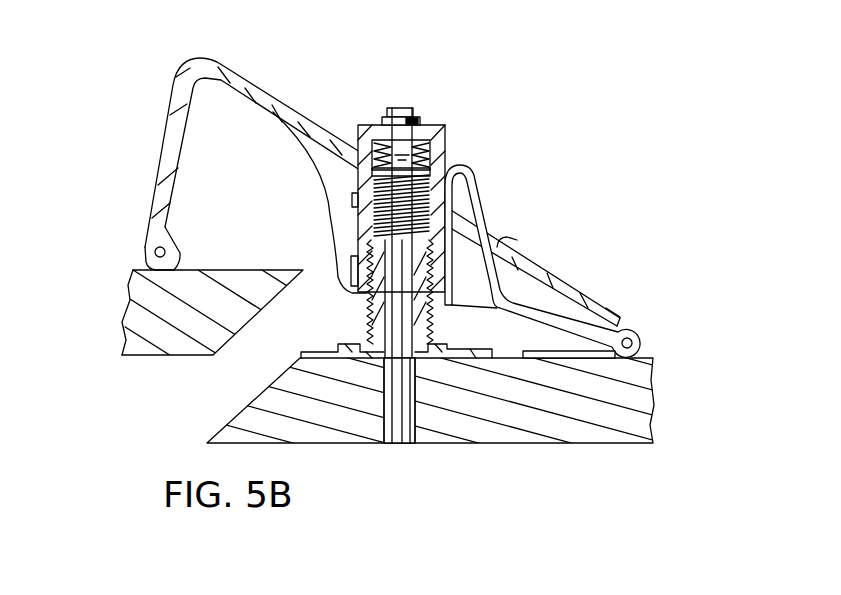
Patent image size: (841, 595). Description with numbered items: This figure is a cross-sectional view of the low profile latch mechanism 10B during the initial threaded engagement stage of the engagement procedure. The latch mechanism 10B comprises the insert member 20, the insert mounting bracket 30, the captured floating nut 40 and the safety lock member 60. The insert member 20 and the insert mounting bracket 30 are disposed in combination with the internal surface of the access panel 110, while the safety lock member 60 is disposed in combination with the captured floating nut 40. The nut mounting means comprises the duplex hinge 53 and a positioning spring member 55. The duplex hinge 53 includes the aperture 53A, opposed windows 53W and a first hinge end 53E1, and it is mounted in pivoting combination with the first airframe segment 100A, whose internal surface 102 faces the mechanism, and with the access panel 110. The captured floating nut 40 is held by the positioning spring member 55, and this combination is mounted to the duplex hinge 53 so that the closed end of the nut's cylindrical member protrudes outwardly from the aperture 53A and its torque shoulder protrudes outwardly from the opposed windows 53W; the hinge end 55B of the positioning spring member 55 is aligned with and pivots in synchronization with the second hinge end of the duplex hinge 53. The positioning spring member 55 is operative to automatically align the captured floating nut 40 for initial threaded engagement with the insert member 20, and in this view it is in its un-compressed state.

The low profile latch mechanism 10B is at (495, 258).
The insert member 20 is at (362, 308).
The insert mounting bracket 30 is at (340, 331).
The captured floating nut 40 is at (452, 150).
The duplex hinge 53 is at (361, 180).
The aperture 53A is at (515, 240).
The first hinge end 53E1 is at (143, 254).
The opposed windows 53W is at (620, 322).
The positioning spring member 55 is at (579, 261).
The hinge end 55B is at (648, 338).
The safety lock member 60 is at (428, 118).
The first airframe segment 100A is at (138, 320).
The internal surface 102 is at (228, 294).
The access panel 110 is at (555, 430).